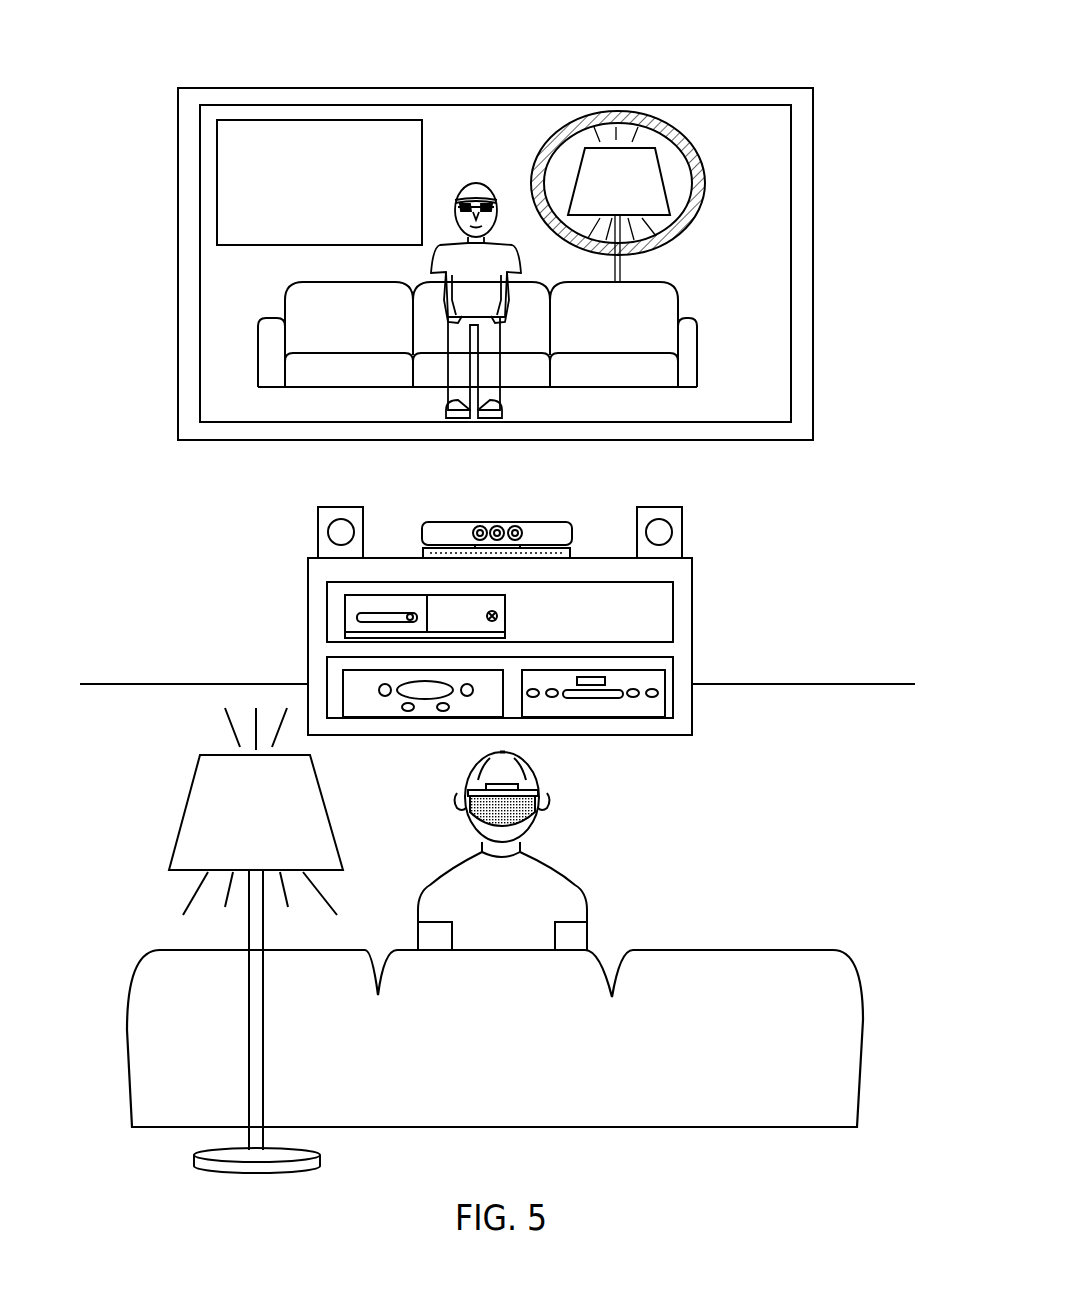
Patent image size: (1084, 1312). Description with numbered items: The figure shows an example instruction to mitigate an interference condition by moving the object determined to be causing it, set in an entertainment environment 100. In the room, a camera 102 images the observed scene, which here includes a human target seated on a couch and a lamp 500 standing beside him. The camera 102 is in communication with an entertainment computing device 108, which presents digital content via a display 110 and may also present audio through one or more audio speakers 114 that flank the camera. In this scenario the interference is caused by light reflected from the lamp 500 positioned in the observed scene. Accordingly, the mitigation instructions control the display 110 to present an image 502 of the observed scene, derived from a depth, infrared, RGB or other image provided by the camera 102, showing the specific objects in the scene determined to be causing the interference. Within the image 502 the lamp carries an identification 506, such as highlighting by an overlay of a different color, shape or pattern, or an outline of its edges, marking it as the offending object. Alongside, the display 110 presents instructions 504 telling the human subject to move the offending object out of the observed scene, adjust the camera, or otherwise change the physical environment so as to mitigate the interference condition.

The entertainment environment 100 is at (818, 32).
The display 110 is at (813, 247).
The image 502 is at (763, 262).
The instructions 504 is at (423, 140).
The identification 506 is at (697, 155).
The audio speakers 114 is at (348, 507).
The camera 102 is at (540, 522).
The entertainment computing device 108 is at (345, 625).
The lamp 500 is at (325, 803).